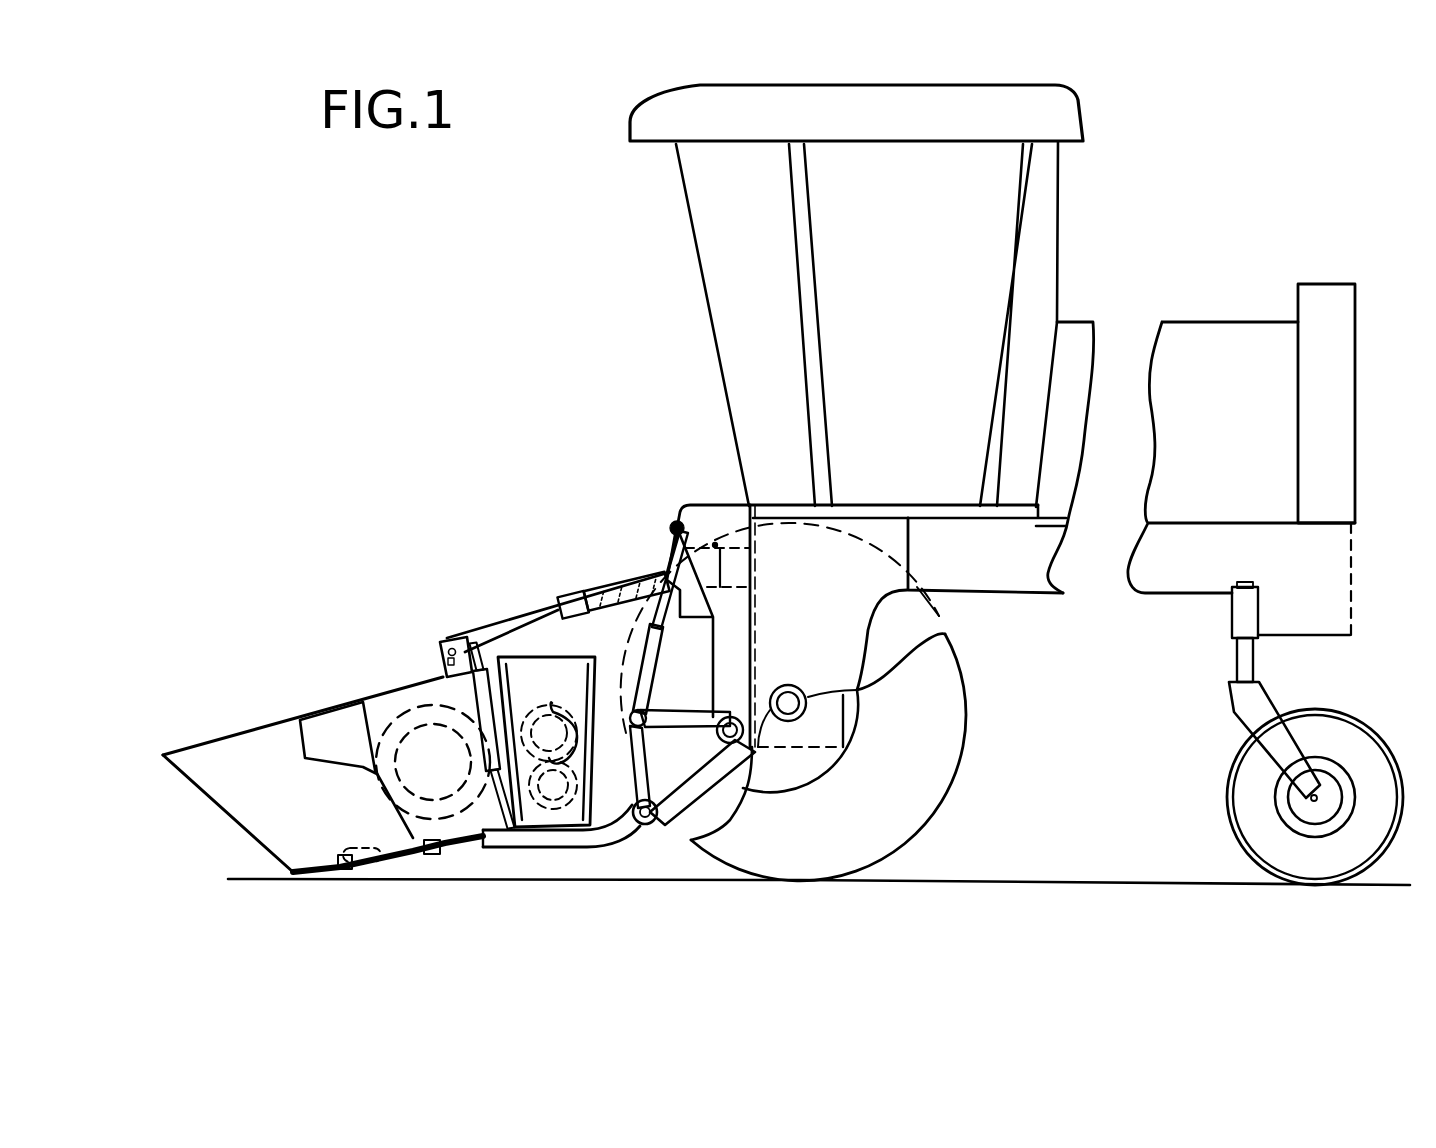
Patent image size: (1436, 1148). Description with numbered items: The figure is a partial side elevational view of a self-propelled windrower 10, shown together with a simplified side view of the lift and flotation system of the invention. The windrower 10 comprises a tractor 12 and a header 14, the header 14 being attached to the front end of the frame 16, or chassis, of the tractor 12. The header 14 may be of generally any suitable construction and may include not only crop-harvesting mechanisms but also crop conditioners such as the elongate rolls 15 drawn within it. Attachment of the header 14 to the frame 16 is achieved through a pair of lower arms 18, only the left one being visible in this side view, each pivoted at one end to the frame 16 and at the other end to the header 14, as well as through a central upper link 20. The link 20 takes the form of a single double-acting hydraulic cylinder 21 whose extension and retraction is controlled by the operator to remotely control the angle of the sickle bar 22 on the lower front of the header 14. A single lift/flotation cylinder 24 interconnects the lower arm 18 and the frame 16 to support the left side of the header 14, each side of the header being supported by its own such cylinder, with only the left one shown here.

The self-propelled windrower 10 is at (606, 252).
The tractor 12 is at (1222, 266).
The header 14 is at (468, 540).
The elongate rolls 15 is at (552, 703).
The frame 16 is at (736, 630).
The lower arms 18 is at (606, 834).
The central upper link 20 is at (565, 580).
The double-acting hydraulic cylinder 21 is at (613, 582).
The sickle bar 22 is at (379, 873).
The lift/flotation cylinder 24 is at (673, 623).